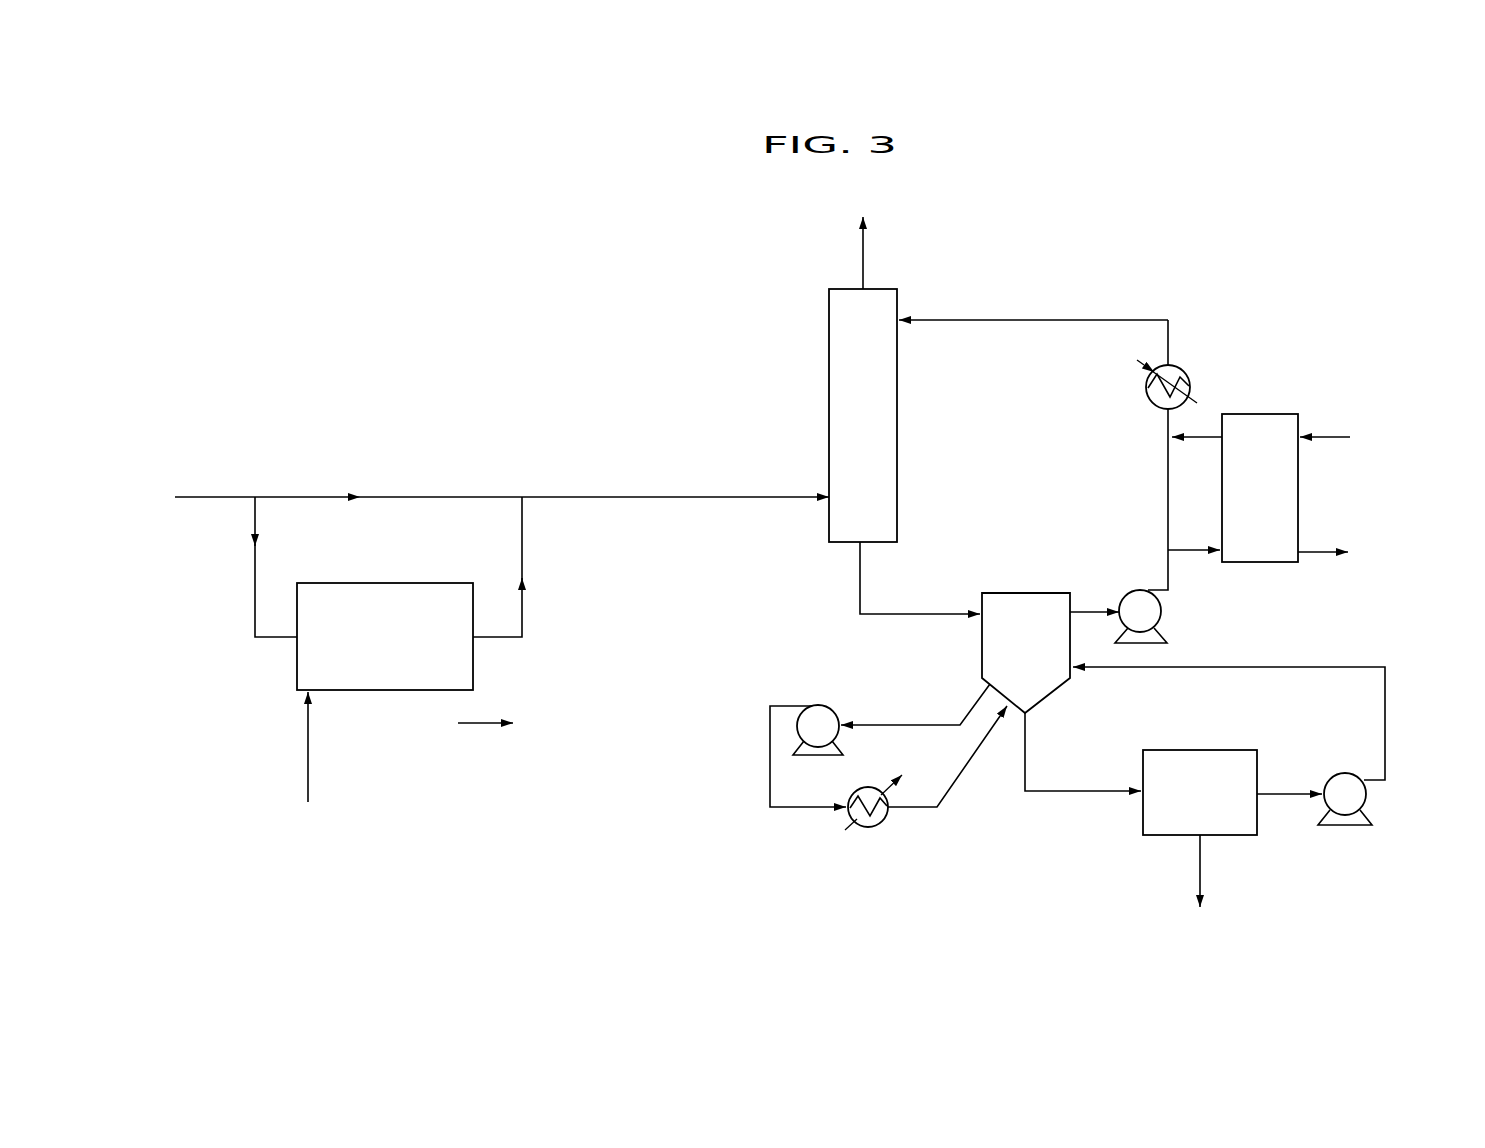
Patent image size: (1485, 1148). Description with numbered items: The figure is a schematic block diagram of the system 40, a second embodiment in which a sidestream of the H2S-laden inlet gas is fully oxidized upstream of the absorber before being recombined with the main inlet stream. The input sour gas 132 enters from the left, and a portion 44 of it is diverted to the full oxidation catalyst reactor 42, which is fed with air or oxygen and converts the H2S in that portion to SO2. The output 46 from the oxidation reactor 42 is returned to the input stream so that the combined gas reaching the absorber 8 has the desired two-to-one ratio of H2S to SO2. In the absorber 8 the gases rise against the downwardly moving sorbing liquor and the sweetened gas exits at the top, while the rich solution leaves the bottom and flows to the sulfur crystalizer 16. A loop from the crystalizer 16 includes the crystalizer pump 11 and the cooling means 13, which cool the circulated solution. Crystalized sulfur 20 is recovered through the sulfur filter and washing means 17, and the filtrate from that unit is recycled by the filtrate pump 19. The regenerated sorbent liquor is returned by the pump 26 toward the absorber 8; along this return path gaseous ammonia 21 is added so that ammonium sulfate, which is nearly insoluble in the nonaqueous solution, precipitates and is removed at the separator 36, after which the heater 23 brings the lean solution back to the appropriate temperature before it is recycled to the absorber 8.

The system 40 is at (578, 327).
The input sour gas 132 is at (232, 457).
The portion of the input sour gas 44 is at (254, 584).
The output from the oxidation reactor 46 is at (525, 602).
The oxidation catalyst reactor 42 is at (295, 662).
The absorber 8 is at (827, 381).
The heater 23 is at (1144, 388).
The separator 36 is at (1220, 492).
The gaseous ammonia 21 is at (1338, 434).
The pump 26 is at (1139, 579).
The sulfur crystalizer 16 is at (980, 640).
The crystalizer pump 11 is at (818, 705).
The cooling means 13 is at (839, 820).
The sulfur filter and washing means 17 is at (1141, 812).
The crystalized sulfur 20 is at (1197, 875).
The filtrate pump 19 is at (1369, 796).